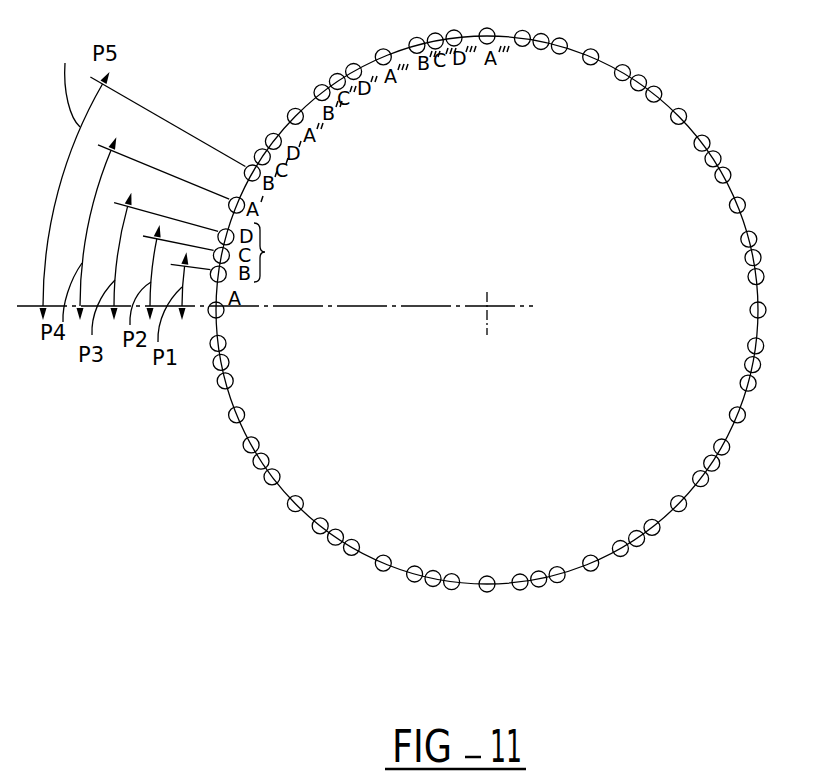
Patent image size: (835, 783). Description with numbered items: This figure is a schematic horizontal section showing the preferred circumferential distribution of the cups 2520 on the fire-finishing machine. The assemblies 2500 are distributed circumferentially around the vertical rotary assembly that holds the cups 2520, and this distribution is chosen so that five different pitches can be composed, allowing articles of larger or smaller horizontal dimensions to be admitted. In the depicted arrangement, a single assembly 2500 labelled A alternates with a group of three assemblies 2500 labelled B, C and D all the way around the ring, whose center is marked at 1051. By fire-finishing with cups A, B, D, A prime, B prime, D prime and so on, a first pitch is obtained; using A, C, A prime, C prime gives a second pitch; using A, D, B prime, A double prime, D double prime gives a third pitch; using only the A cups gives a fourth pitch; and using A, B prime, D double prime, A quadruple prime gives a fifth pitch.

The assembly 2500 is at (326, 519).
The cup 2520 is at (229, 312).
The axis center 1051 is at (488, 312).